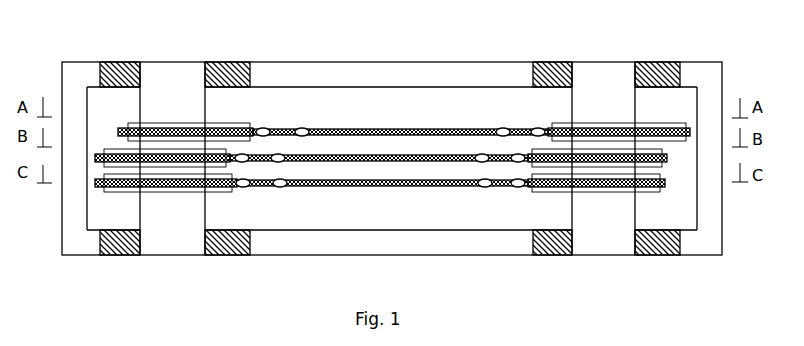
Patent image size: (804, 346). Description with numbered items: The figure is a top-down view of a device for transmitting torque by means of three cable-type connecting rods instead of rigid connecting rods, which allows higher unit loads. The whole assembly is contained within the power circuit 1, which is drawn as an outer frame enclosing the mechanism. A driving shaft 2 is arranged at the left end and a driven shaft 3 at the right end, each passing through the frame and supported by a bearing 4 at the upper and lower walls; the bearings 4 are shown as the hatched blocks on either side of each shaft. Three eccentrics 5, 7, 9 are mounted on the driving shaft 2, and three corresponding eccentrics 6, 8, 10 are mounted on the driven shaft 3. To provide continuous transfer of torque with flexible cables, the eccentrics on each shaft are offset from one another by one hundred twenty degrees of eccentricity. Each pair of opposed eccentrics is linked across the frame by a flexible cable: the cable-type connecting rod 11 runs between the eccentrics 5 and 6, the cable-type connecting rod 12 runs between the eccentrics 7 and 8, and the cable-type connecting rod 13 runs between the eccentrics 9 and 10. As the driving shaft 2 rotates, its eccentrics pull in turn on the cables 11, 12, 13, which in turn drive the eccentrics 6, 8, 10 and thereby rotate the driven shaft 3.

The power circuit 1 is at (381, 140).
The driving shaft 2 is at (172, 140).
The driven shaft 3 is at (603, 140).
The bearing 4 is at (703, 37).
The eccentric of the driving shaft 5 is at (179, 83).
The eccentric of the driven shaft 6 is at (665, 140).
The eccentric of the driving shaft 7 is at (132, 182).
The eccentric of the driven shaft 8 is at (653, 168).
The eccentric of the driving shaft 9 is at (134, 211).
The eccentric of the driven shaft 10 is at (652, 192).
The cable-type connecting rod 11 is at (400, 81).
The cable-type connecting rod 12 is at (379, 94).
The cable-type connecting rod 13 is at (382, 106).